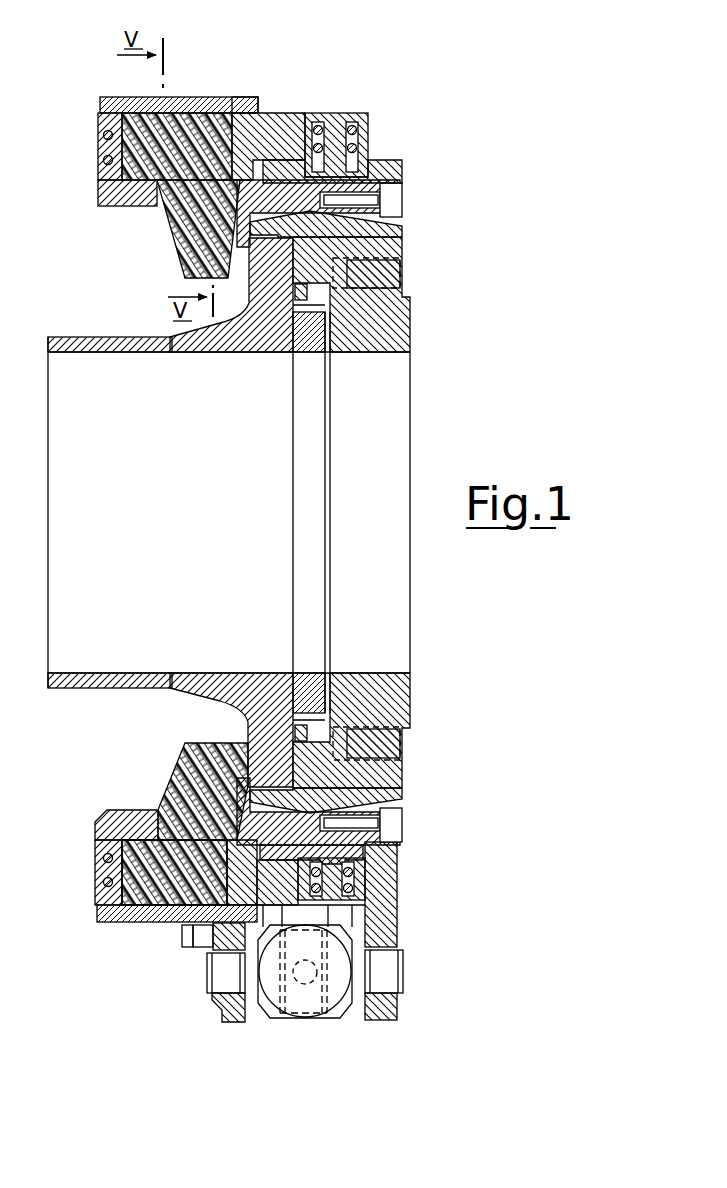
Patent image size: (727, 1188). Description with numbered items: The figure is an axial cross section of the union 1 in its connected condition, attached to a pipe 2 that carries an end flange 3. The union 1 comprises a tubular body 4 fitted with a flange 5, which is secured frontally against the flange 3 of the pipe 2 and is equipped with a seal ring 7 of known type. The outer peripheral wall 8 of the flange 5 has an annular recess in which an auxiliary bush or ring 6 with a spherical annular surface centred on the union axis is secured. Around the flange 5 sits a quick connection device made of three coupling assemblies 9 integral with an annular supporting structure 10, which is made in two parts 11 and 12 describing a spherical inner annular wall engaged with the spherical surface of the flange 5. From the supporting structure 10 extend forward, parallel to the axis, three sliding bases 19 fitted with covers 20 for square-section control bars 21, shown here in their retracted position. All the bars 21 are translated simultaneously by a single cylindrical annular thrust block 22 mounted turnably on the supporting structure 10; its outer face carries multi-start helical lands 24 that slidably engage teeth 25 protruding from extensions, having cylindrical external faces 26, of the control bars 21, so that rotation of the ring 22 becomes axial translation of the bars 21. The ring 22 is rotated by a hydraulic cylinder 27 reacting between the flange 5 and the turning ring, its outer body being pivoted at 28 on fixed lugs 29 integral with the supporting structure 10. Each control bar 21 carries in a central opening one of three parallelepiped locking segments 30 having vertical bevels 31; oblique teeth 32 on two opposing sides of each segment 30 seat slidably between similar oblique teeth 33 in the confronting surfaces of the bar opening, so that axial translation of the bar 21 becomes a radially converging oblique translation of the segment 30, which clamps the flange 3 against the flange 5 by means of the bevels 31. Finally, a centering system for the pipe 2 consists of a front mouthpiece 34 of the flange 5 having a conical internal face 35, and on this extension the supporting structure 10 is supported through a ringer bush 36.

The union 1 is at (365, 579).
The pipe 2 is at (80, 692).
The end flange 3 is at (257, 730).
The tubular body 4 is at (372, 328).
The flange 5 is at (403, 250).
The auxiliary bush or ring 6 is at (365, 779).
The seal ring 7 is at (311, 345).
The outer peripheral wall 8 is at (268, 860).
The coupling assemblies 9 is at (239, 90).
The annular supporting structure 10 is at (404, 222).
The part of supporting structure 11 is at (300, 177).
The part of supporting structure 12 is at (389, 170).
The sliding bases 19 is at (113, 204).
The covers 20 is at (122, 108).
The control bars 21 is at (276, 103).
The annular thrust block 22 is at (375, 848).
The helical lands 24 is at (302, 188).
The teeth 25 is at (330, 160).
The cylindrical external faces 26 is at (362, 888).
The hydraulic cylinder 27 is at (313, 1007).
The pivot 28 is at (217, 978).
The fixed lugs 29 is at (233, 1013).
The locking segments 30 is at (170, 252).
The vertical bevels 31 is at (254, 258).
The oblique teeth 32 is at (186, 115).
The oblique teeth 33 is at (122, 147).
The front mouthpiece 34 is at (173, 784).
The conical internal face 35 is at (187, 757).
The ringer bush 36 is at (167, 806).